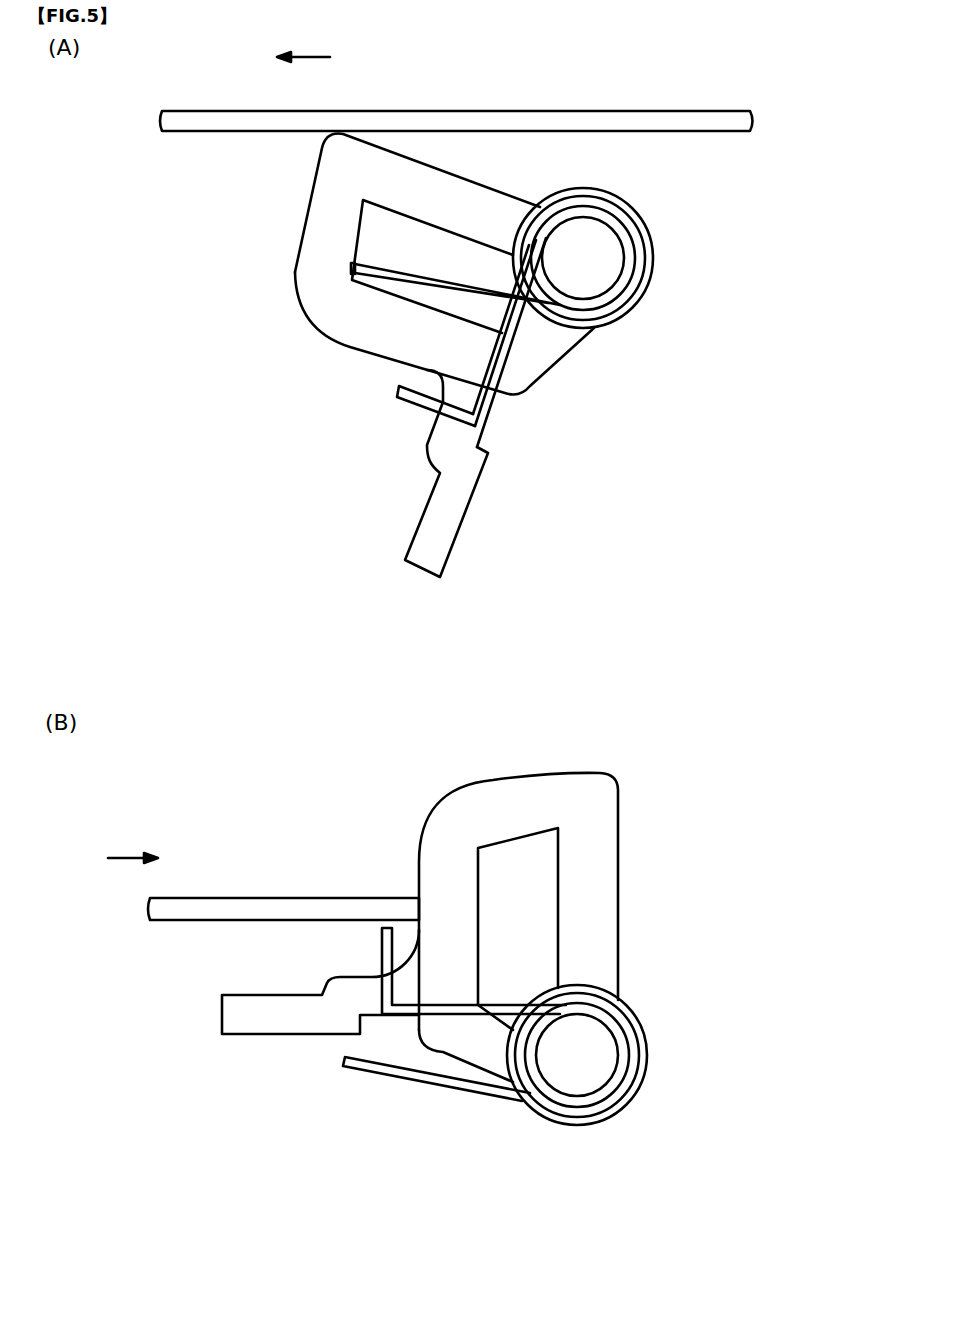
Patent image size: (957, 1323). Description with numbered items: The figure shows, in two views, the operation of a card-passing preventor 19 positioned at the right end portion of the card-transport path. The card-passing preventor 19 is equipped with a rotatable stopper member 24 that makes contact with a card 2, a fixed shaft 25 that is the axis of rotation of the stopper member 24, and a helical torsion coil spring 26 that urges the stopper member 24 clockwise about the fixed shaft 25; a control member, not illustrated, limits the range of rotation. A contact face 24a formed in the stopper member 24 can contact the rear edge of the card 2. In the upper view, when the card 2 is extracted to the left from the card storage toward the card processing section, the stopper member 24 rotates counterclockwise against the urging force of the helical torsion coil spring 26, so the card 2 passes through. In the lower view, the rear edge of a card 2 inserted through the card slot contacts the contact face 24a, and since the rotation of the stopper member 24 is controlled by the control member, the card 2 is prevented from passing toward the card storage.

The card 2 is at (635, 110).
The card-passing preventor 19 is at (737, 245).
The stopper member 24 is at (560, 357).
The contact face 24a is at (340, 347).
The fixed shaft 25 is at (595, 242).
The helical torsion coil spring 26 is at (407, 401).